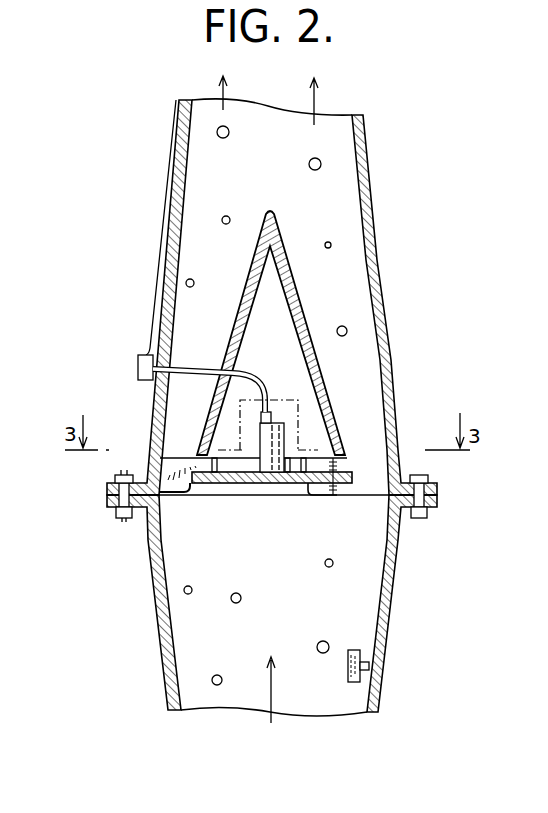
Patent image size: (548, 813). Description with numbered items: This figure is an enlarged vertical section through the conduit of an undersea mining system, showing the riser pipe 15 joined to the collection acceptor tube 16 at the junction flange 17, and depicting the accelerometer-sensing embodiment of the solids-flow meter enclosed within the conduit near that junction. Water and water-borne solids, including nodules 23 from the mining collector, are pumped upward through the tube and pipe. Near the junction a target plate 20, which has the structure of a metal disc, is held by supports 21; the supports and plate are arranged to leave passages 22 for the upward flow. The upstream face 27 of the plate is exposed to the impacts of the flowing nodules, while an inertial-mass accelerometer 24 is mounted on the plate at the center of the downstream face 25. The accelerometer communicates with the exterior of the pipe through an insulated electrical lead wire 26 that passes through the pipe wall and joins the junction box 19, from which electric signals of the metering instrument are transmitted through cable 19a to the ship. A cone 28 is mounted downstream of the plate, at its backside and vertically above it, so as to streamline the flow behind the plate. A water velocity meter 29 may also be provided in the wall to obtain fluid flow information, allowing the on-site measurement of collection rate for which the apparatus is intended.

The riser pipe 15 is at (367, 214).
The collection acceptor tube 16 is at (395, 591).
The junction flange 17 is at (437, 493).
The junction box 19 is at (138, 363).
The cable 19a is at (163, 233).
The target plate 20 is at (218, 480).
The supports 21 is at (162, 461).
The passages 22 is at (367, 453).
The nodules 23 is at (318, 648).
The inertial-mass accelerometer 24 is at (267, 463).
The downstream face 25 is at (230, 440).
The insulated electrical lead wire 26 is at (190, 371).
The upstream face 27 is at (289, 483).
The cone 28 is at (308, 314).
The water velocity meter 29 is at (369, 655).